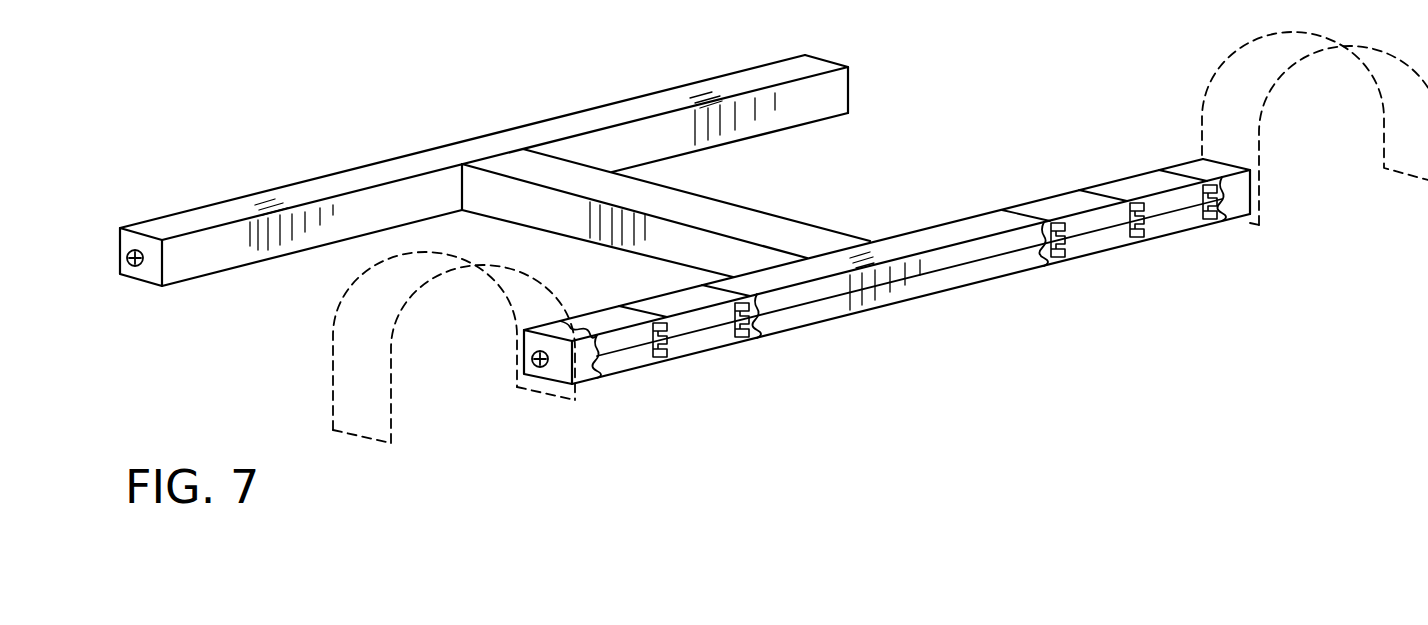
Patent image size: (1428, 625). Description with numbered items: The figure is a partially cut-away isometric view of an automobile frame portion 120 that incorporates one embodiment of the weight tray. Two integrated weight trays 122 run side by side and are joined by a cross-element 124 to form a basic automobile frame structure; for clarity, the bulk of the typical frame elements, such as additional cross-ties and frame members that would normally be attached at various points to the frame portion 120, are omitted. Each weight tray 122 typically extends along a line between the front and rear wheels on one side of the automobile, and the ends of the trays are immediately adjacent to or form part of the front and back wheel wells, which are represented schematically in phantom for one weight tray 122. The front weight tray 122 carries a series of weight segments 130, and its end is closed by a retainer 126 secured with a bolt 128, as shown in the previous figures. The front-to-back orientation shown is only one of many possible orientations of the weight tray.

The automobile frame portion 120 is at (497, 112).
The weight tray 122 is at (330, 185).
The cross-element 124 is at (768, 212).
The retainer 126 is at (162, 242).
The bolt 128 is at (141, 262).
The weight segment 130 is at (630, 360).